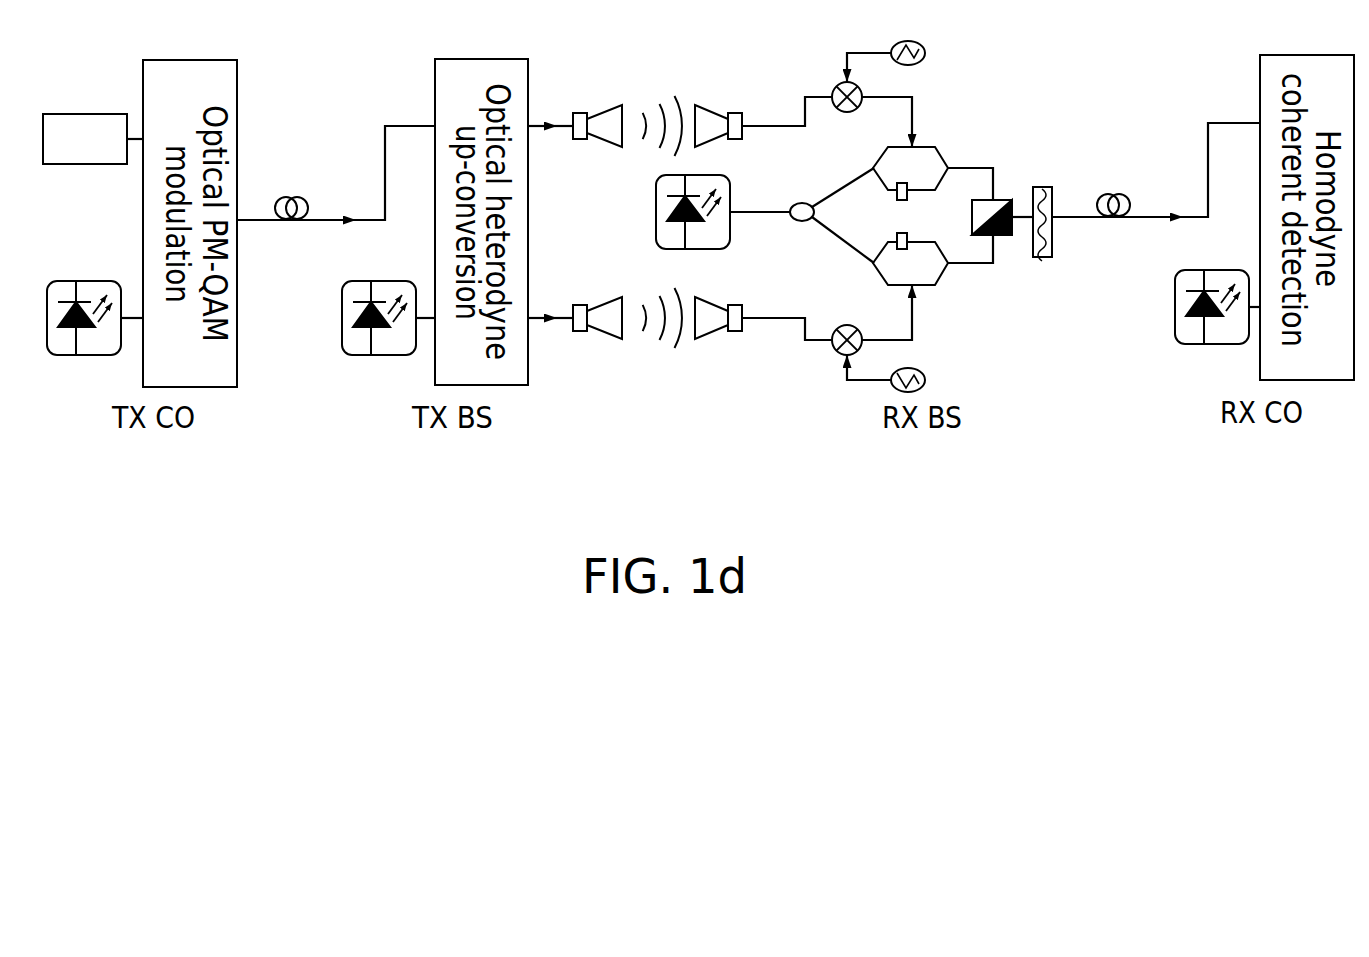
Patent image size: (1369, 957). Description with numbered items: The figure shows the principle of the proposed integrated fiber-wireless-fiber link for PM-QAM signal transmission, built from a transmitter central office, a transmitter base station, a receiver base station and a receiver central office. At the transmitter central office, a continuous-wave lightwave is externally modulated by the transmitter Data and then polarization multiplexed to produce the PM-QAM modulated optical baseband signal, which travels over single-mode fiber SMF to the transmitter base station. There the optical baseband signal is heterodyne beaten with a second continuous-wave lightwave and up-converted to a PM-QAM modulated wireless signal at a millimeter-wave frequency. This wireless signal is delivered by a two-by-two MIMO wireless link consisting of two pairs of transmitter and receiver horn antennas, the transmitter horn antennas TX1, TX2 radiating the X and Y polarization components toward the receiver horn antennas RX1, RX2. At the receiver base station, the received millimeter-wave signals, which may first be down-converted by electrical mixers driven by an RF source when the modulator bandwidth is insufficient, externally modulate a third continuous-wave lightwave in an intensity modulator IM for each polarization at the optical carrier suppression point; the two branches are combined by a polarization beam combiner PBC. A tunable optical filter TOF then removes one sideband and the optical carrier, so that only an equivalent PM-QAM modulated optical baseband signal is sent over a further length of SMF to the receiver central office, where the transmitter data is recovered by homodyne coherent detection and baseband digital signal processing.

The transmitter data Data is at (93, 139).
The single-mode fiber SMF is at (748, 191).
The transmitter horn antenna TX1 is at (605, 110).
The transmitter horn antenna TX2 is at (605, 332).
The receiver horn antenna RX1 is at (763, 106).
The receiver horn antenna RX2 is at (763, 337).
The X polarization X is at (663, 149).
The Y polarization Y is at (662, 286).
The intensity modulator IM is at (930, 231).
The RF source RF is at (911, 216).
The polarization beam combiner PBC is at (1002, 206).
The tunable optical filter TOF is at (1046, 243).